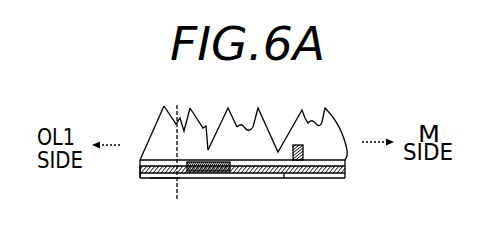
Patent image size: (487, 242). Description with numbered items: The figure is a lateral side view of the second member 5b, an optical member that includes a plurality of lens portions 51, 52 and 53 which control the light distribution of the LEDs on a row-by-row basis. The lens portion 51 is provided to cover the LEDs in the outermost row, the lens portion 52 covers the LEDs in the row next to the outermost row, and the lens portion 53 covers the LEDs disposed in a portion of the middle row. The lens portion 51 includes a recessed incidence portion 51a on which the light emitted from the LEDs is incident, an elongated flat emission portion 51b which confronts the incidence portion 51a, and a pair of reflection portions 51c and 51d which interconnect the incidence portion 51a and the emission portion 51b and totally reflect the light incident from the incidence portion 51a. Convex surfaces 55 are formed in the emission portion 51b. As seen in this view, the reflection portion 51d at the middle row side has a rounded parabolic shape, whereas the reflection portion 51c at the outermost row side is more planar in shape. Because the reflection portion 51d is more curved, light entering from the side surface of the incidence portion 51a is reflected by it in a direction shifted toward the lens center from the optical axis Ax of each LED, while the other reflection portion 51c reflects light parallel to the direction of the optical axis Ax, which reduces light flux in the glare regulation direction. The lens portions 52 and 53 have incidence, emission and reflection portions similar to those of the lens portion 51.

The second member 5b is at (86, 88).
The lens portion 51 is at (188, 178).
The incidence portion 51a is at (165, 107).
The emission portion 51b is at (162, 179).
The reflection portion 51c is at (144, 143).
The reflection portion 51d is at (227, 116).
The lens portion 52 is at (255, 179).
The lens portion 53 is at (325, 179).
The convex surfaces 55 is at (140, 178).
The optical axis Ax is at (176, 166).